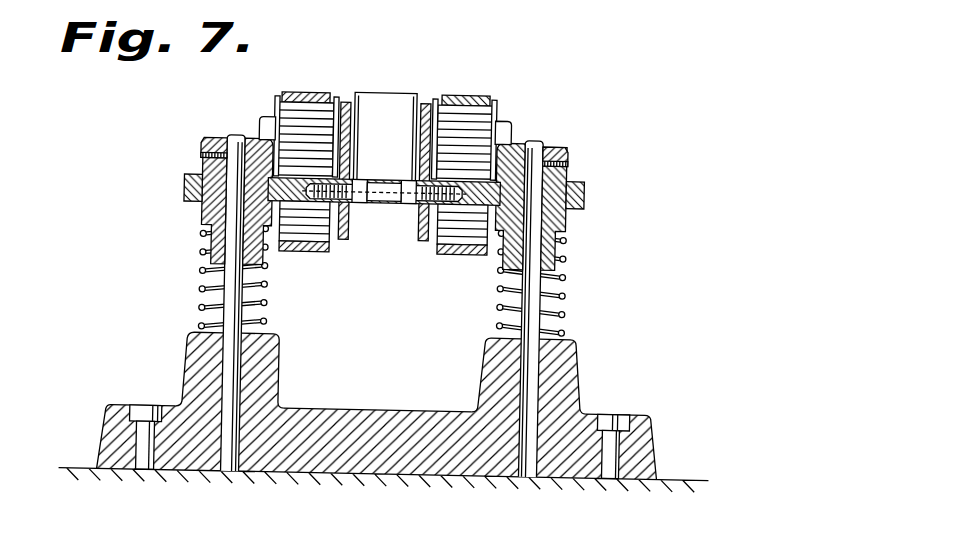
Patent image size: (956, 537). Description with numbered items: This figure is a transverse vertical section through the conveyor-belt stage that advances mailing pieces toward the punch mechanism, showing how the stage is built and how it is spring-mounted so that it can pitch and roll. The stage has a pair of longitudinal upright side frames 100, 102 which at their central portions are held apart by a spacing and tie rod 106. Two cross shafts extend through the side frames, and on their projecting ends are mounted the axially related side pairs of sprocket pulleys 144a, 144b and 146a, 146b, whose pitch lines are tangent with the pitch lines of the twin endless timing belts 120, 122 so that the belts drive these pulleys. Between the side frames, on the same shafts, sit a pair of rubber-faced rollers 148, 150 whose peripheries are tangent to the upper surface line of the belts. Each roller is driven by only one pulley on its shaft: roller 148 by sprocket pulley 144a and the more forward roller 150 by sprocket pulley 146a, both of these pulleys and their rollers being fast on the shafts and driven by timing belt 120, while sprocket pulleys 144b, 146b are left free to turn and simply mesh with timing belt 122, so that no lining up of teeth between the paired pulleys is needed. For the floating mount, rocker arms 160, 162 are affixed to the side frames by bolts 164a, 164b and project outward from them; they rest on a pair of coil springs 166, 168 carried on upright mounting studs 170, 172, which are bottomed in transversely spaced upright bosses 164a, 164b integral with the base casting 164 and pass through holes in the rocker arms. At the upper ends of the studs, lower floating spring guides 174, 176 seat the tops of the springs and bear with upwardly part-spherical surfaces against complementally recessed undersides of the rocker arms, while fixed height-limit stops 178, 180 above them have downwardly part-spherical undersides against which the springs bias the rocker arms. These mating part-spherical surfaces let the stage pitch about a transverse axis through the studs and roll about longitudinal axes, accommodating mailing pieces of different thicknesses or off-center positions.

The side frame 100 is at (422, 243).
The side frame 102 is at (342, 242).
The spacing and tie rod 106 is at (385, 192).
The timing belt 120 is at (477, 93).
The timing belt 122 is at (320, 90).
The sprocket pulley 144a is at (483, 122).
The sprocket pulley 144b is at (297, 125).
The sprocket pulley 146a is at (593, 129).
The sprocket pulley 146b is at (235, 126).
The rubber-faced roller 148 is at (413, 79).
The rubber-faced roller 150 is at (433, 119).
The rocker arm 160 is at (582, 200).
The rocker arm 162 is at (182, 192).
The base casting 164 is at (400, 399).
The boss 164a is at (567, 387).
The boss 164b is at (190, 389).
The coil spring 166 is at (563, 302).
The coil spring 168 is at (202, 288).
The mounting stud 170 is at (537, 357).
The mounting stud 172 is at (227, 354).
The floating spring guide 174 is at (567, 225).
The floating spring guide 176 is at (200, 219).
The height-limit stop 178 is at (558, 150).
The height-limit stop 180 is at (200, 139).